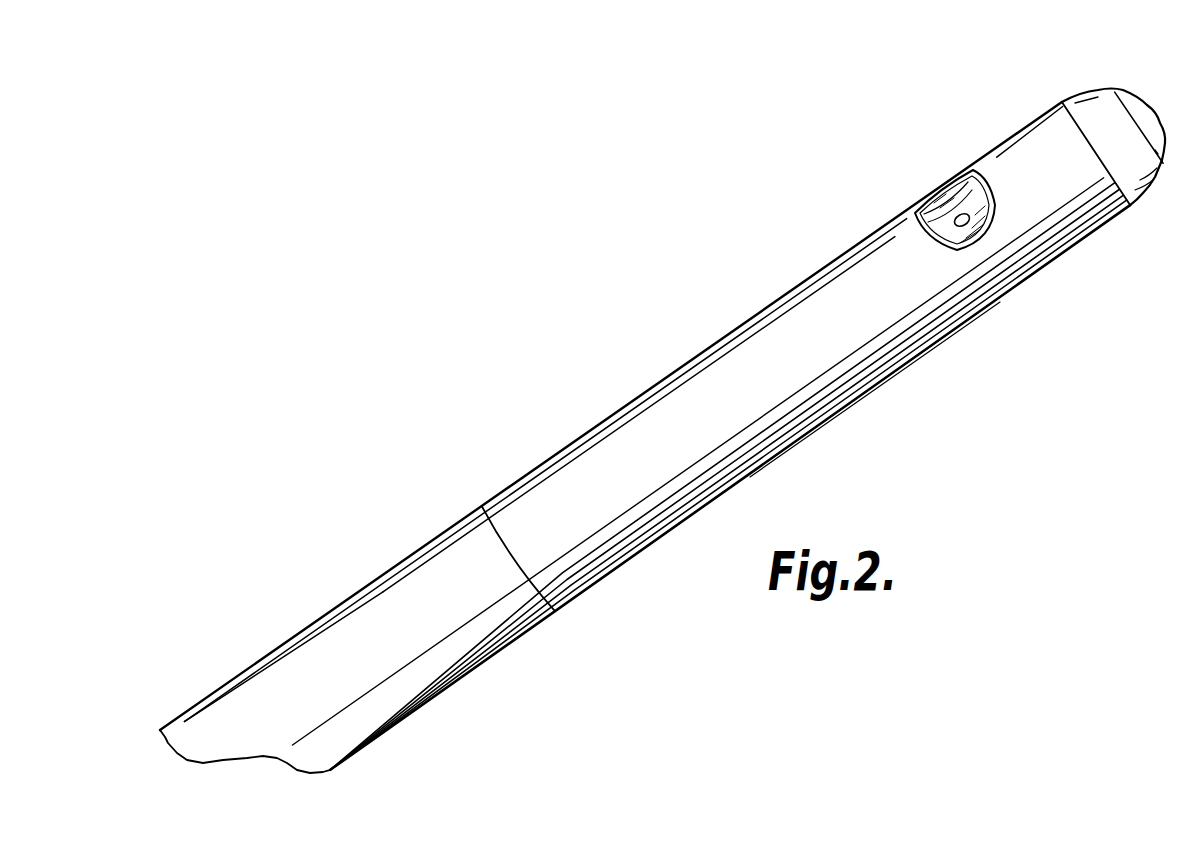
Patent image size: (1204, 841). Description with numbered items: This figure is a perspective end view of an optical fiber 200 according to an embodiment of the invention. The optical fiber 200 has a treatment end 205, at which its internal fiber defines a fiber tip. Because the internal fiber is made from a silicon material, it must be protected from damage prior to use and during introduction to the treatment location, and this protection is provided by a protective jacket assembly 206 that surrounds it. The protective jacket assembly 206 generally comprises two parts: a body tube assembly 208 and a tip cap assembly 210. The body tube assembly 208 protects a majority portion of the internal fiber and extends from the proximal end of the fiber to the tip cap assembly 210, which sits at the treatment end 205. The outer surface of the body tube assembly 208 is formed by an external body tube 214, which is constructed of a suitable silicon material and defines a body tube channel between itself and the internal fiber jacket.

The optical fiber 200 is at (565, 353).
The treatment end 205 is at (1152, 112).
The protective jacket assembly 206 is at (687, 521).
The body tube assembly 208 is at (293, 640).
The tip cap assembly 210 is at (853, 403).
The external body tube 214 is at (467, 668).